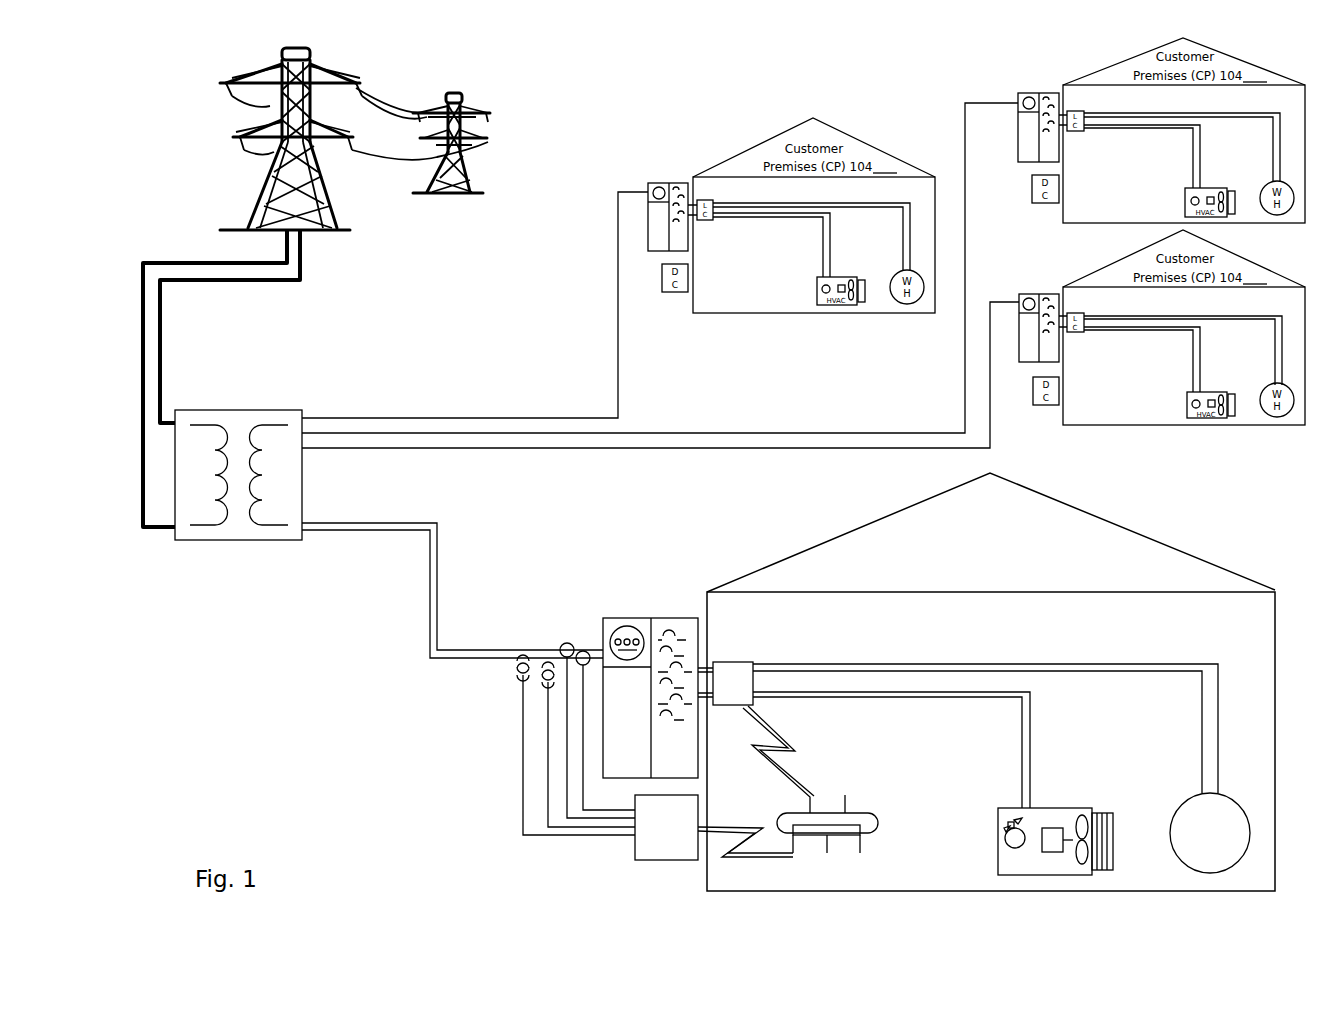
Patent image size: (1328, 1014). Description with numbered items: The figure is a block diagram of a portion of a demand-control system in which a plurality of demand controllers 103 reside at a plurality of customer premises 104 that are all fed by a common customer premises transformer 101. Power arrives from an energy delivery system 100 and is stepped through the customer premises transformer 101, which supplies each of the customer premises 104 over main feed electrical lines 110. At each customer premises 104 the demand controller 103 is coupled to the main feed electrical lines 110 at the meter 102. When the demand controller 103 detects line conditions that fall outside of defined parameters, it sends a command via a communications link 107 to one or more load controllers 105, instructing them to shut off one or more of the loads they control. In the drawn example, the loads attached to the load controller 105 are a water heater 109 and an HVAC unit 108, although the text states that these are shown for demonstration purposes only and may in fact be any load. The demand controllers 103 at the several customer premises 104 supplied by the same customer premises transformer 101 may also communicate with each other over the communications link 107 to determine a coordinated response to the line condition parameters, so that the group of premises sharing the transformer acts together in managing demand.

The energy delivery system 100 is at (291, 293).
The customer premises transformer 101 is at (234, 410).
The meter 102 is at (610, 618).
The demand controller 103 is at (633, 852).
The customer premises 104 is at (1226, 590).
The load controller 105 is at (728, 662).
The communications link 107 is at (775, 733).
The HVAC unit 108 is at (1055, 808).
The water heater 109 is at (1195, 798).
The main feed electrical lines 110 is at (440, 545).